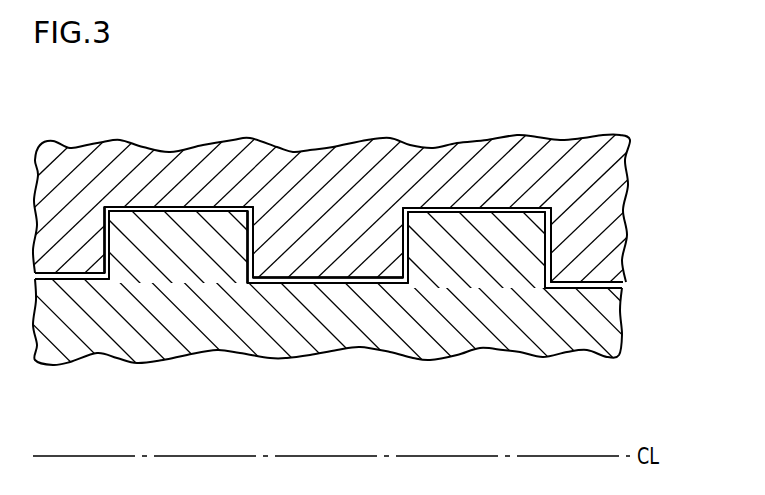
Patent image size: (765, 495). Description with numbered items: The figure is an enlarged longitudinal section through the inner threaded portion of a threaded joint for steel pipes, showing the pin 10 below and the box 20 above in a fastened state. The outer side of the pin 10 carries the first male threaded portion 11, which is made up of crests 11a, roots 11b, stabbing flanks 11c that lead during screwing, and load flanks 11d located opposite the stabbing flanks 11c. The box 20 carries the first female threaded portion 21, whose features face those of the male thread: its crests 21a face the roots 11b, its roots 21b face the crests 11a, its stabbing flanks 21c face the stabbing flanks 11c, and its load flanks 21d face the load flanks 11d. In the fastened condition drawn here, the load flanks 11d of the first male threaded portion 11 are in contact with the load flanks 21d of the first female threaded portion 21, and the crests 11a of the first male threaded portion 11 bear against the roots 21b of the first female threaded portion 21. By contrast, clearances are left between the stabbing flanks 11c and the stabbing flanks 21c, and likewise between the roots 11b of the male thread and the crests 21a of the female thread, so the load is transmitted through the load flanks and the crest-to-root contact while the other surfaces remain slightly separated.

The pin 10 is at (540, 362).
The first male threaded portion 11 is at (492, 320).
The crests 11a is at (187, 213).
The roots 11b is at (322, 286).
The stabbing flanks 11c is at (238, 248).
The load flanks 11d is at (115, 274).
The box 20 is at (542, 132).
The first female threaded portion 21 is at (473, 175).
The crests 21a is at (318, 276).
The roots 21b is at (172, 205).
The stabbing flanks 21c is at (262, 222).
The load flanks 21d is at (97, 235).